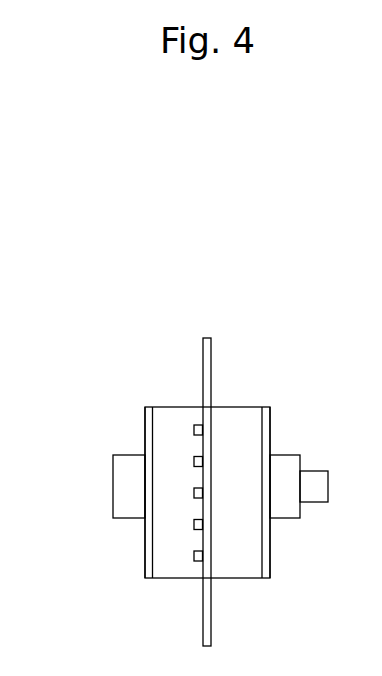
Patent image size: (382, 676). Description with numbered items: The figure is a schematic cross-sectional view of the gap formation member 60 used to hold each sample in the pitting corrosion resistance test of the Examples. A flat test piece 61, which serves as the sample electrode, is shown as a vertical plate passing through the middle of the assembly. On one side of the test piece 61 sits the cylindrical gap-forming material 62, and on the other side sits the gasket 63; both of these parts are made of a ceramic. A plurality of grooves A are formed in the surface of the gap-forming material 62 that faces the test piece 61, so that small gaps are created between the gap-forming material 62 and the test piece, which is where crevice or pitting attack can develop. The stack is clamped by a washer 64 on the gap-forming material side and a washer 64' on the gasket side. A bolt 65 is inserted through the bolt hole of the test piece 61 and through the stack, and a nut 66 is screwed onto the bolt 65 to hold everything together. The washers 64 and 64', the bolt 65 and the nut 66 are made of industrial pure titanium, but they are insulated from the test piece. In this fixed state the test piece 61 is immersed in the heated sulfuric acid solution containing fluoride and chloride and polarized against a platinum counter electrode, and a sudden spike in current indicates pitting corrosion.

The gap formation member 60 is at (78, 313).
The test piece 61 is at (212, 365).
The cylindrical gap-forming material 62 is at (173, 448).
The gasket 63 is at (247, 428).
The washer 64 is at (104, 492).
The washer 64' is at (301, 526).
The bolt 65 is at (128, 487).
The nut 66 is at (285, 505).
The grooves A is at (195, 430).